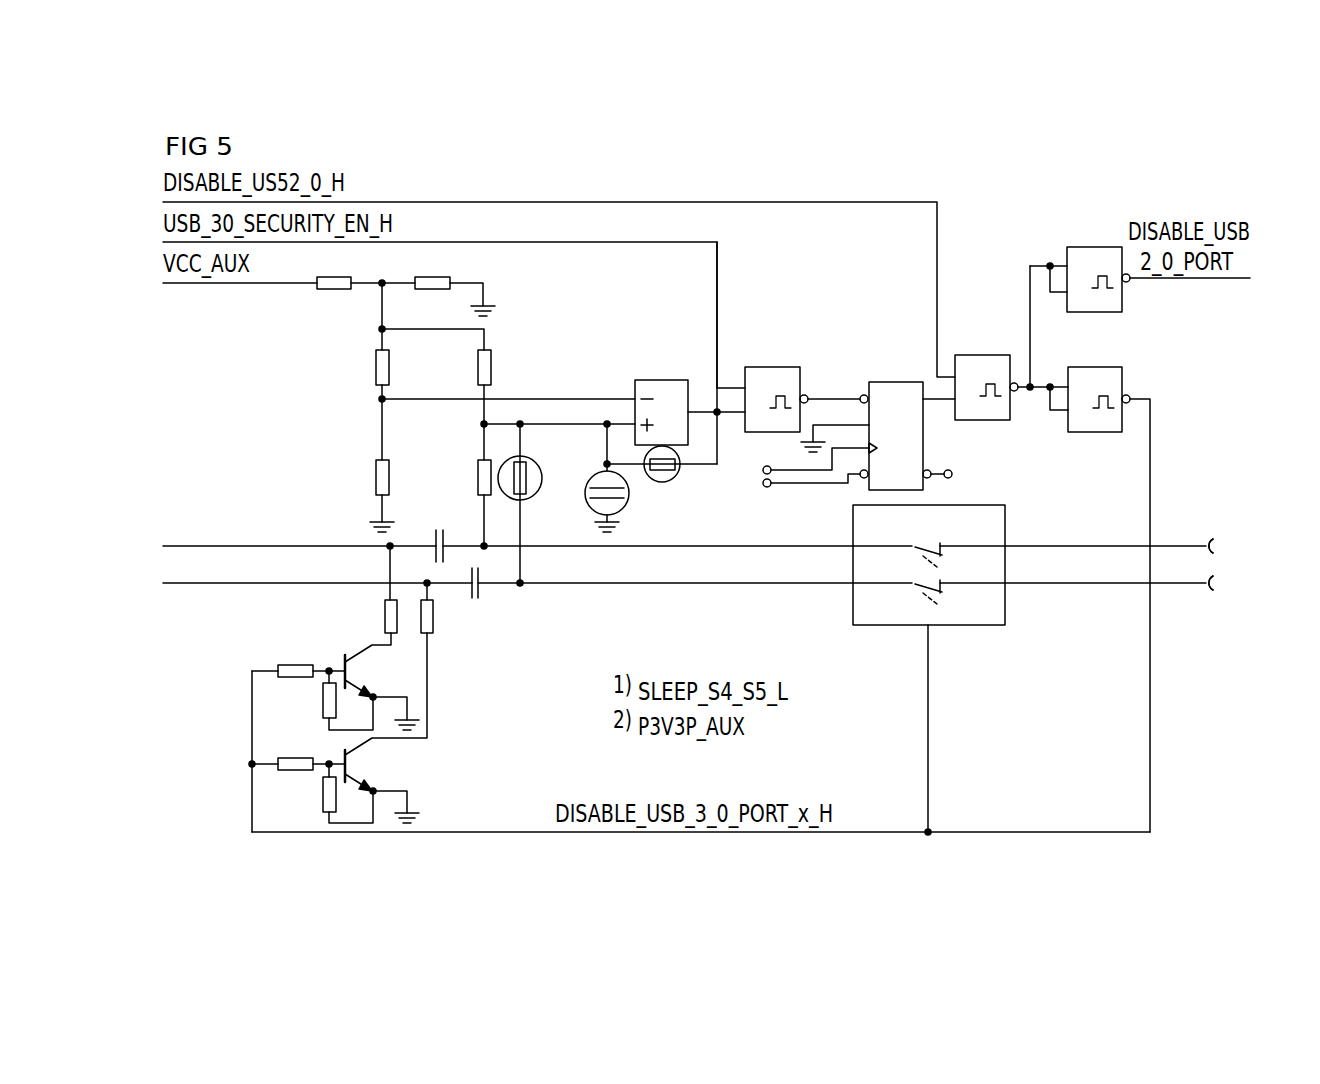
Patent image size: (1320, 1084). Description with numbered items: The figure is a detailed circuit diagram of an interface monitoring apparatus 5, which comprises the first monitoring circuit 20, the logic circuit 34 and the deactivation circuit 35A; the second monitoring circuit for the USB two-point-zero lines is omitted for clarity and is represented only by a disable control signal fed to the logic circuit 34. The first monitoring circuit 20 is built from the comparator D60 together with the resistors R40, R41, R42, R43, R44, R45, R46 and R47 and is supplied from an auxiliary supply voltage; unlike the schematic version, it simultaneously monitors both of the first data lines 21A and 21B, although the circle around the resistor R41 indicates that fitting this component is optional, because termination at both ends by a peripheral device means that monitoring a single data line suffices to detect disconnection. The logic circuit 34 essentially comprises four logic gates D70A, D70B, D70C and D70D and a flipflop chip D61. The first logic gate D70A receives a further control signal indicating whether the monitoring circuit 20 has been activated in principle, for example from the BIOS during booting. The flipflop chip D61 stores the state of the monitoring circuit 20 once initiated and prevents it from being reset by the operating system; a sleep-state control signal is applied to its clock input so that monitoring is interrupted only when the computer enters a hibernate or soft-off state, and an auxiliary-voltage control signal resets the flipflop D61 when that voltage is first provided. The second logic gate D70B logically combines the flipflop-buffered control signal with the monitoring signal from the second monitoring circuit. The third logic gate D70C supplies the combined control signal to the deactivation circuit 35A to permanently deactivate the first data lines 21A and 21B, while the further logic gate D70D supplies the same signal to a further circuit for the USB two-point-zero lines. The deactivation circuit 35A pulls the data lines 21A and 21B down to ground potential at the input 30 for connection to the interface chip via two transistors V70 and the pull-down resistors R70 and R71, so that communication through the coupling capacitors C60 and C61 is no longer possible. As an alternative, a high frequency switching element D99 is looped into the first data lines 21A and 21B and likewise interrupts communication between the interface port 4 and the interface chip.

The interface port 4 is at (1210, 518).
The interface monitoring apparatus 5 is at (1016, 195).
The first monitoring circuit 20 is at (527, 431).
The first data line 21A is at (1168, 543).
The first data line 21B is at (1170, 585).
The input 30 is at (206, 600).
The logic circuit 34 is at (1102, 517).
The deactivation circuit 35A is at (426, 650).
The transistors V70 is at (428, 765).
The resistor R40 is at (478, 474).
The resistor R41 is at (541, 470).
The resistor R42 is at (665, 482).
The resistor R43 is at (478, 366).
The resistor R44 is at (376, 368).
The resistor R45 is at (335, 290).
The resistor R46 is at (452, 283).
The resistor R47 is at (376, 476).
The pull-down resistor R70 is at (385, 618).
The pull-down resistor R71 is at (490, 680).
The capacitor C60 is at (436, 528).
The capacitor C61 is at (588, 490).
The comparator D60 is at (662, 380).
The flipflop chip D61 is at (892, 382).
The first logic gate D70A is at (768, 367).
The second logic gate D70B is at (985, 355).
The third logic gate D70C is at (1095, 432).
The further logic gate D70D is at (1093, 247).
The high frequency switching element D99 is at (963, 626).